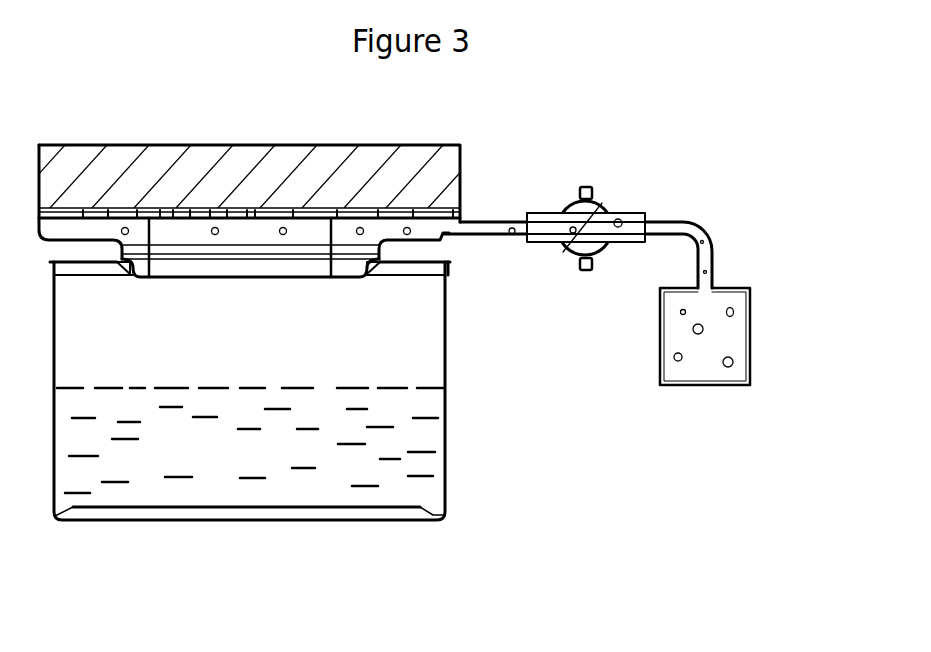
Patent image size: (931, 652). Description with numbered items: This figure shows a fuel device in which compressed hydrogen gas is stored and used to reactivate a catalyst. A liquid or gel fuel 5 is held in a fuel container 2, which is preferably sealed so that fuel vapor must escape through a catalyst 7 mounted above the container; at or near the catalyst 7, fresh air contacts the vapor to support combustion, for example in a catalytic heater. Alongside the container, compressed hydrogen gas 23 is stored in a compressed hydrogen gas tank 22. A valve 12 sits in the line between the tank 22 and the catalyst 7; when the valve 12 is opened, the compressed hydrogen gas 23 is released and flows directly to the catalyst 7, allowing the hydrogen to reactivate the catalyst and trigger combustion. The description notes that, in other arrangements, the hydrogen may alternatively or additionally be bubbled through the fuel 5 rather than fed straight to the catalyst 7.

The fuel container 2 is at (462, 449).
The liquid or gel fuel 5 is at (303, 484).
The catalyst 7 is at (415, 174).
The valve 12 is at (612, 192).
The compressed hydrogen gas tank 22 is at (765, 322).
The compressed hydrogen gas 23 is at (655, 358).